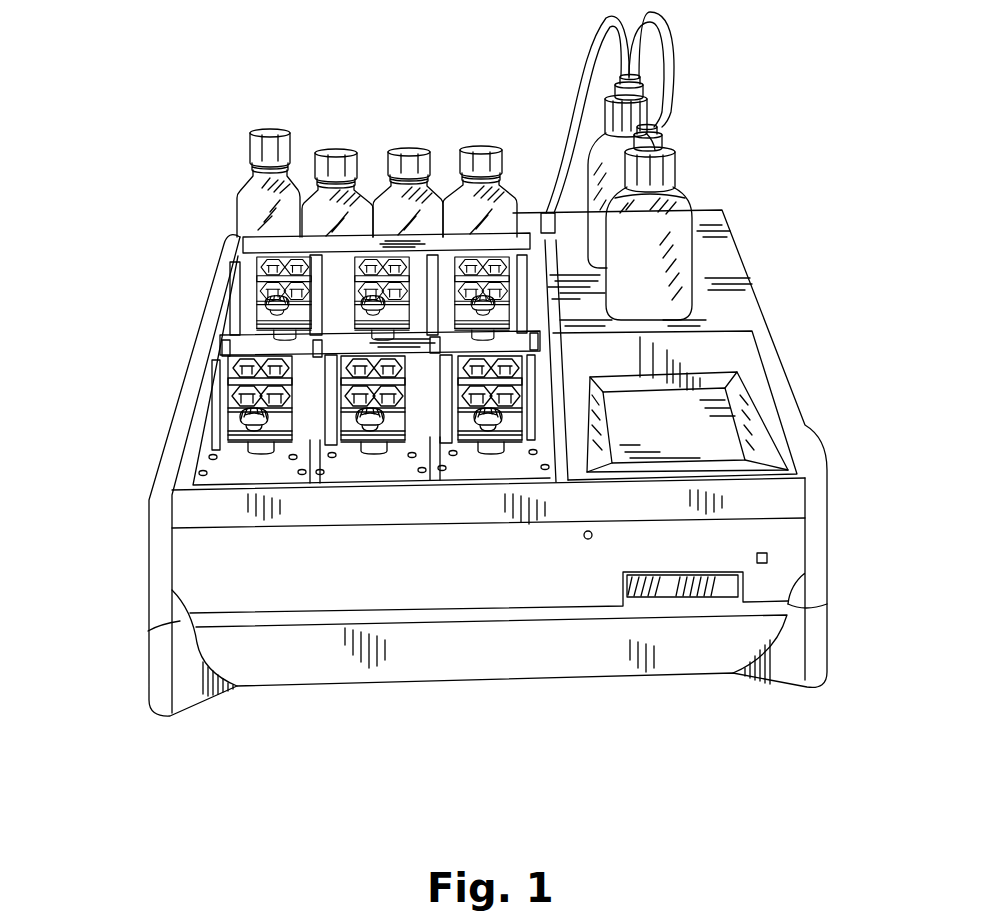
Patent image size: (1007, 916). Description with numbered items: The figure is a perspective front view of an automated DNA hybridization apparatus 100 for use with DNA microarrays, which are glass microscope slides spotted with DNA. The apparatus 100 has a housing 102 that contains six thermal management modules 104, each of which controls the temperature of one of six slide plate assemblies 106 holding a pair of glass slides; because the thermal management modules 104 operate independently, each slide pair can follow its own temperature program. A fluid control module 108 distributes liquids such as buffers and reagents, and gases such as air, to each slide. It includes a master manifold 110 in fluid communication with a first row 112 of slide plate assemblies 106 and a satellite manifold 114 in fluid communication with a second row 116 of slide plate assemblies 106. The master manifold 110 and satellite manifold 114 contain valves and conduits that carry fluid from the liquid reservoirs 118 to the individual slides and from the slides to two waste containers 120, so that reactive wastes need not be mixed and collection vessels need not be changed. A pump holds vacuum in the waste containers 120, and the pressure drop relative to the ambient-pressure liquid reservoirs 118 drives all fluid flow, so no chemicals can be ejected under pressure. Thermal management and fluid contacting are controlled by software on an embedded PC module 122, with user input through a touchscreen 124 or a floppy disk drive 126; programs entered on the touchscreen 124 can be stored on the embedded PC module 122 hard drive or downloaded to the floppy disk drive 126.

The automated DNA hybridization apparatus 100 is at (731, 82).
The housing 102 is at (807, 425).
The thermal management module 104 is at (250, 334).
The slide plate assembly 106 is at (255, 296).
The fluid control module 108 is at (340, 118).
The master manifold 110 is at (248, 250).
The first row 112 is at (180, 307).
The satellite manifold 114 is at (237, 350).
The second row 116 is at (157, 408).
The liquid reservoir 118 is at (255, 185).
The waste container 120 is at (595, 182).
The embedded personal computer module 122 is at (727, 352).
The touchscreen 124 is at (657, 428).
The floppy disk drive 126 is at (688, 585).